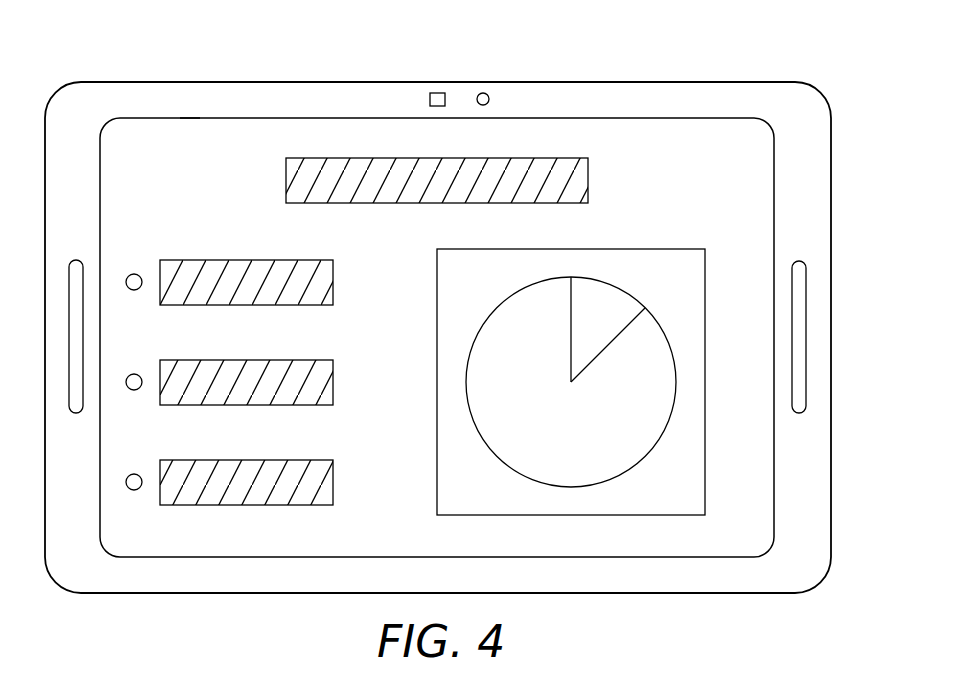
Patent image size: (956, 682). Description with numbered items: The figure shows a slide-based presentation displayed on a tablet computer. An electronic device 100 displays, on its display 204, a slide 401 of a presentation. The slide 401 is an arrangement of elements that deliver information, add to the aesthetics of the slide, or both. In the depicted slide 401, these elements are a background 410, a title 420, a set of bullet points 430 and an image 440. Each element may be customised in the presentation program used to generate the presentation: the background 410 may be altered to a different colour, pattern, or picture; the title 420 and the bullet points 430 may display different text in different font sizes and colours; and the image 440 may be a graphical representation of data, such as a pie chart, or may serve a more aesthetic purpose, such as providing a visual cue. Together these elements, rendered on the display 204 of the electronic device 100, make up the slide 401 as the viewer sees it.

The electronic device 100 is at (752, 70).
The display 204 is at (126, 118).
The slide 401 is at (188, 118).
The background 410 is at (252, 140).
The title 420 is at (413, 158).
The bullet points 430 is at (134, 274).
The image 440 is at (676, 249).